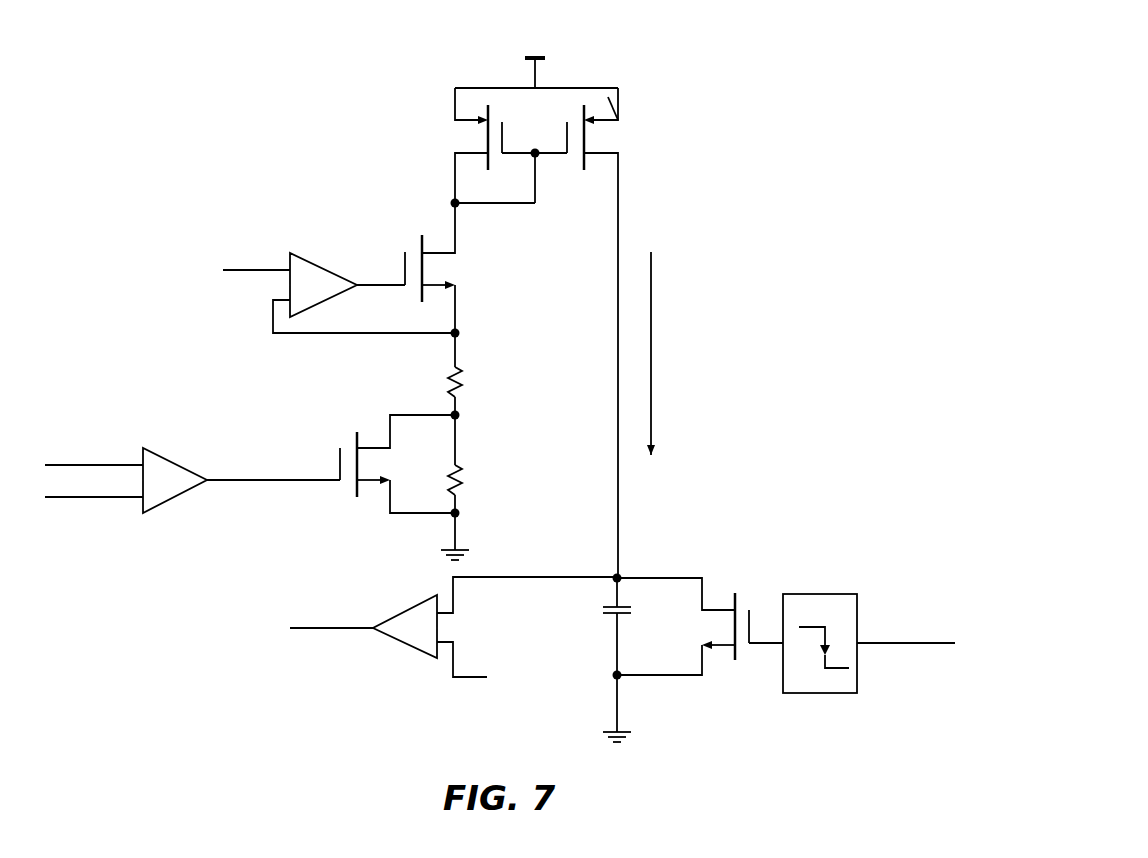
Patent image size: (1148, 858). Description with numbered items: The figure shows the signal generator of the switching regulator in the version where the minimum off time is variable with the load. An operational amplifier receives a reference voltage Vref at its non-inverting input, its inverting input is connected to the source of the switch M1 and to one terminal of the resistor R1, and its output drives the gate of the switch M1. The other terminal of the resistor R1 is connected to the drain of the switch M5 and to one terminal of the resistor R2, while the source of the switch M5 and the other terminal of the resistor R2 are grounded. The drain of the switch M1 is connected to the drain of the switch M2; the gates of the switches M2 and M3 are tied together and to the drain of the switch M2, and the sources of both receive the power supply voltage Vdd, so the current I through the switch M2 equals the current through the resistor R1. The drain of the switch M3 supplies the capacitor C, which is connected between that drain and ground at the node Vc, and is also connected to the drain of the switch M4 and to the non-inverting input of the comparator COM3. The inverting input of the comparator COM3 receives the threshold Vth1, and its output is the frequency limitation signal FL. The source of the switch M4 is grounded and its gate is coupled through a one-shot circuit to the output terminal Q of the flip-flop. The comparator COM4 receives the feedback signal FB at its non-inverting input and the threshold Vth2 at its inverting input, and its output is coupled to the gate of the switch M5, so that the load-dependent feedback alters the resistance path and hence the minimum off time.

The power supply voltage Vdd is at (532, 60).
The switch M2 is at (460, 145).
The switch M3 is at (608, 333).
The switch M1 is at (428, 268).
The switch M4 is at (700, 637).
The switch M5 is at (385, 464).
The resistor R1 is at (467, 374).
The resistor R2 is at (467, 464).
The capacitor C is at (597, 626).
The comparator COM3 is at (495, 627).
The comparator COM4 is at (241, 476).
The reference voltage Vref is at (252, 258).
The threshold Vth1 is at (475, 696).
The threshold Vth2 is at (94, 452).
The feedback signal FB is at (94, 485).
The frequency limitation signal FL is at (331, 617).
The capacitor voltage node Vc is at (629, 568).
The current I is at (666, 353).
The output terminal Q is at (906, 632).